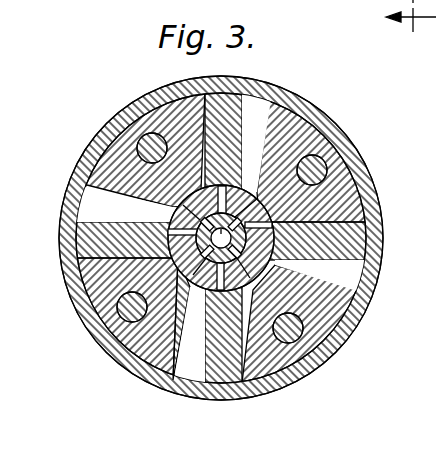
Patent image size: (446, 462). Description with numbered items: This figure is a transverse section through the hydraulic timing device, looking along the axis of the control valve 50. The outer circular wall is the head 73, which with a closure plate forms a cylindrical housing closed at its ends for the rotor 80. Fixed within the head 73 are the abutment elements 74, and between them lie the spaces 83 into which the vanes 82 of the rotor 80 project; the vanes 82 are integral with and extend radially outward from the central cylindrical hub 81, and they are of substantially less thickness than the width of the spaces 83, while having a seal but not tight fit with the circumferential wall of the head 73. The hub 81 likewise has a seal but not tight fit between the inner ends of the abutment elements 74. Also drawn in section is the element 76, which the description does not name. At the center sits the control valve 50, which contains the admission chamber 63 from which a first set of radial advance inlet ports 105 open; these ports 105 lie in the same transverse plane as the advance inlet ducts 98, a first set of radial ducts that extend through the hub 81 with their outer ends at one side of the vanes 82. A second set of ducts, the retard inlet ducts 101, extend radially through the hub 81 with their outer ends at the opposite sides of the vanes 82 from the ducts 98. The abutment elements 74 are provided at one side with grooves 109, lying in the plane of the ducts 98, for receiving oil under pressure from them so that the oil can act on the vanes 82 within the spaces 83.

The control valve 50 is at (196, 238).
The admission chamber 63 is at (228, 214).
The head 73 is at (310, 112).
The abutment elements 74 is at (317, 140).
The hole 76 is at (314, 177).
The rotor 80 is at (246, 115).
The central cylindrical hub 81 is at (264, 170).
The vanes 82 is at (221, 372).
The spaces 83 is at (366, 310).
The advance inlet ducts 98 is at (190, 290).
The retard inlet ducts 101 is at (173, 212).
The advance inlet ports 105 is at (278, 263).
The grooves 109 is at (137, 205).